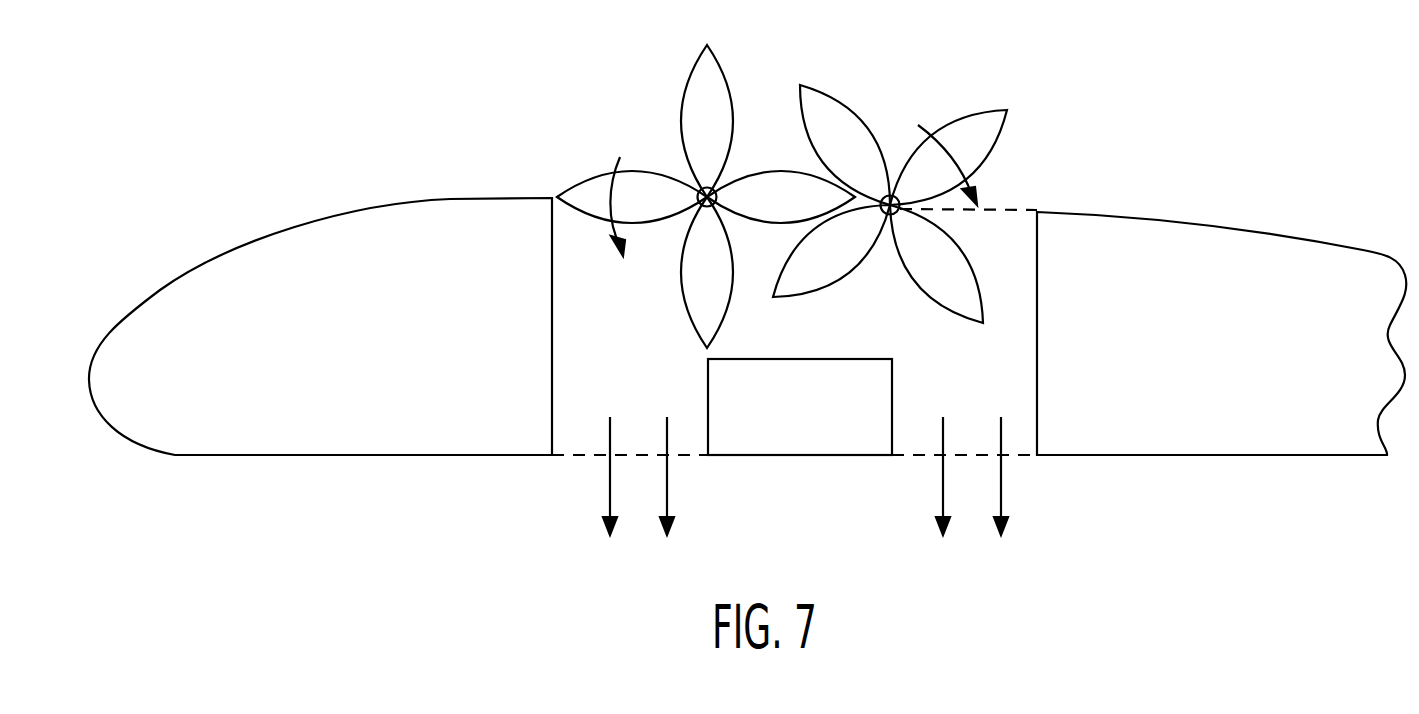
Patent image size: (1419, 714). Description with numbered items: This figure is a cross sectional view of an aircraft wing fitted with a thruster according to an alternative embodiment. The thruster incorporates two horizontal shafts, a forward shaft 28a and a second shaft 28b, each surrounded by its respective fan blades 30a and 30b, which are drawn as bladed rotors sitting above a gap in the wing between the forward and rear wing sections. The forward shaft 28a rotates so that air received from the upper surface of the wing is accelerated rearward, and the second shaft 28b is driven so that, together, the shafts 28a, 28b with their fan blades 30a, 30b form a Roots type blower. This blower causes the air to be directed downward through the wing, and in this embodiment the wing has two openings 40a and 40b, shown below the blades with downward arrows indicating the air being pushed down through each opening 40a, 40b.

The forward shaft 28a is at (715, 186).
The second shaft 28b is at (893, 188).
The fan blades 30a is at (692, 93).
The fan blades 30b is at (1003, 140).
The opening 40a is at (651, 402).
The opening 40b is at (984, 402).